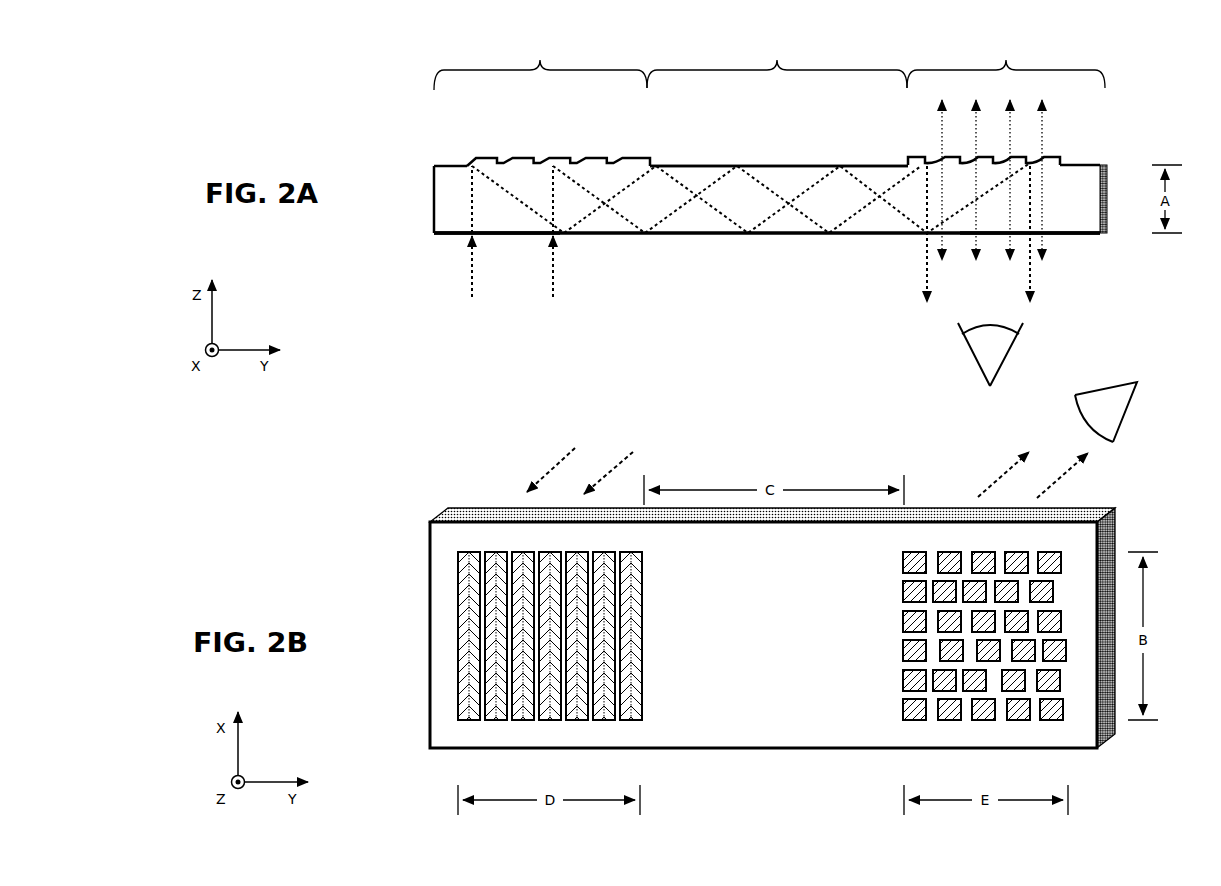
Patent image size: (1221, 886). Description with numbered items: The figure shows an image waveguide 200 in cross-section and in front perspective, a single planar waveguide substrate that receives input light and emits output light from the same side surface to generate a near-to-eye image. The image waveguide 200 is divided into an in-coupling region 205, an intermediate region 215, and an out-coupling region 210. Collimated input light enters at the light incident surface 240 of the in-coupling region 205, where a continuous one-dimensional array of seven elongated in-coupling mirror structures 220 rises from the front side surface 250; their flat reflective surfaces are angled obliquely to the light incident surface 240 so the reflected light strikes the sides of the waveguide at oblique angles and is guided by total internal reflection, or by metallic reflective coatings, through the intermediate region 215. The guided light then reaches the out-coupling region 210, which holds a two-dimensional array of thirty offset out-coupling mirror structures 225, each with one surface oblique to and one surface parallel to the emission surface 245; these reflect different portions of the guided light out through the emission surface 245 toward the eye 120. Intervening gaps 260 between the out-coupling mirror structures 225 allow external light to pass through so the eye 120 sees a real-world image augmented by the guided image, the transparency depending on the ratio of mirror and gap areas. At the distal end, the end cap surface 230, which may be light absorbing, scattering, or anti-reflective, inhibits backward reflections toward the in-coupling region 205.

In FIG. 2A, the image waveguide 200 is at (366, 71).
In FIG. 2B, the image waveguide 200 is at (481, 426).
In FIG. 2A, the in-coupling region 205 is at (540, 51).
In FIG. 2A, the out-coupling region 210 is at (1006, 50).
In FIG. 2A, the intermediate region 215 is at (777, 50).
In FIG. 2A, the in-coupling mirror structures 220 is at (515, 134).
In FIG. 2B, the in-coupling mirror structures 220 is at (498, 721).
In FIG. 2A, the out-coupling mirror structures 225 is at (1094, 129).
In FIG. 2B, the out-coupling mirror structures 225 is at (1018, 721).
In FIG. 2A, the end cap surface 230 is at (1107, 180).
In FIG. 2B, the end cap surface 230 is at (1116, 738).
In FIG. 2A, the light incident surface 240 is at (453, 236).
In FIG. 2A, the emission surface 245 is at (1065, 234).
In FIG. 2A, the front side surface 250 is at (703, 166).
In FIG. 2B, the intervening gaps 260 is at (929, 726).
In FIG. 2A, the eye 120 is at (966, 346).
In FIG. 2B, the eye 120 is at (1140, 398).